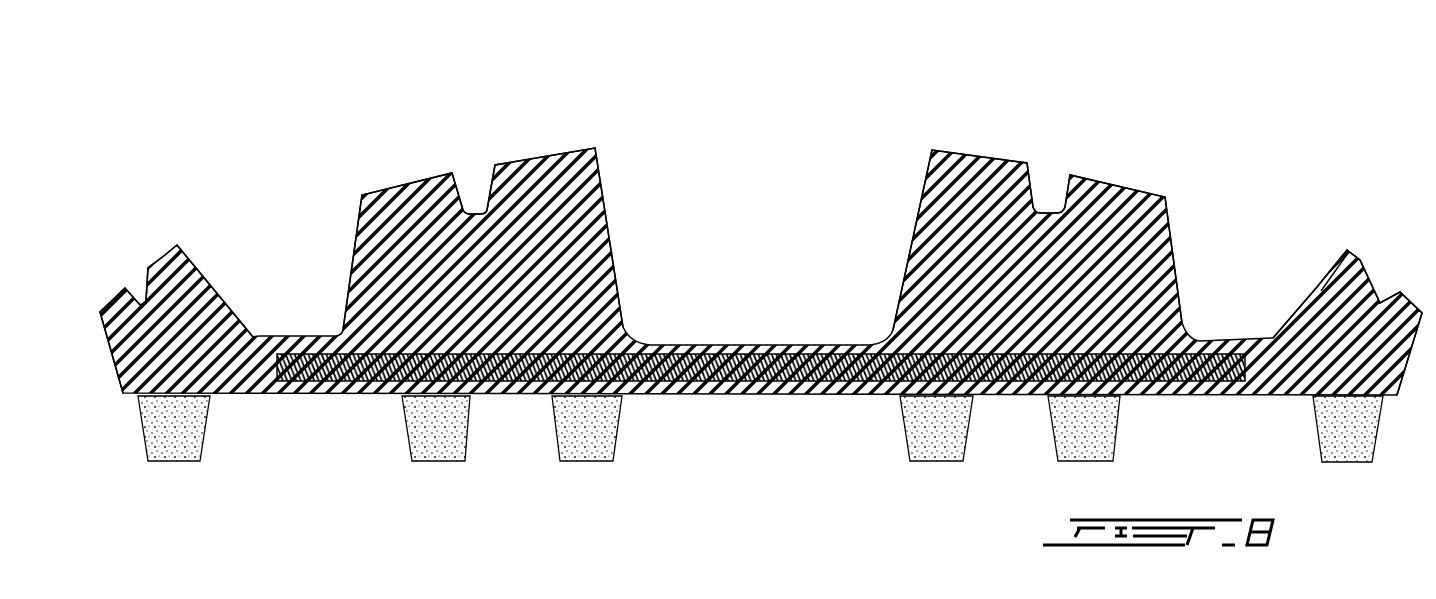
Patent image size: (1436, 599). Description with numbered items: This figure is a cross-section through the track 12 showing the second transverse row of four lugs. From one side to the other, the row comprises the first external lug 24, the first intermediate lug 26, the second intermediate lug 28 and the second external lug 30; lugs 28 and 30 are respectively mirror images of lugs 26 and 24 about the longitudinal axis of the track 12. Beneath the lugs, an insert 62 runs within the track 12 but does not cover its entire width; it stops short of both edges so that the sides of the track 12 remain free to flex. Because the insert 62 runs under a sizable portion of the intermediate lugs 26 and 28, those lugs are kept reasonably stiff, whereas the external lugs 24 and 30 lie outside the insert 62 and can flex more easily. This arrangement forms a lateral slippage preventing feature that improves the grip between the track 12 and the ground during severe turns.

The track 12 is at (245, 135).
The first external lug 24 is at (190, 308).
The first intermediate lug 26 is at (566, 192).
The second intermediate lug 28 is at (1122, 220).
The second external lug 30 is at (1347, 250).
The insert 62 is at (767, 360).